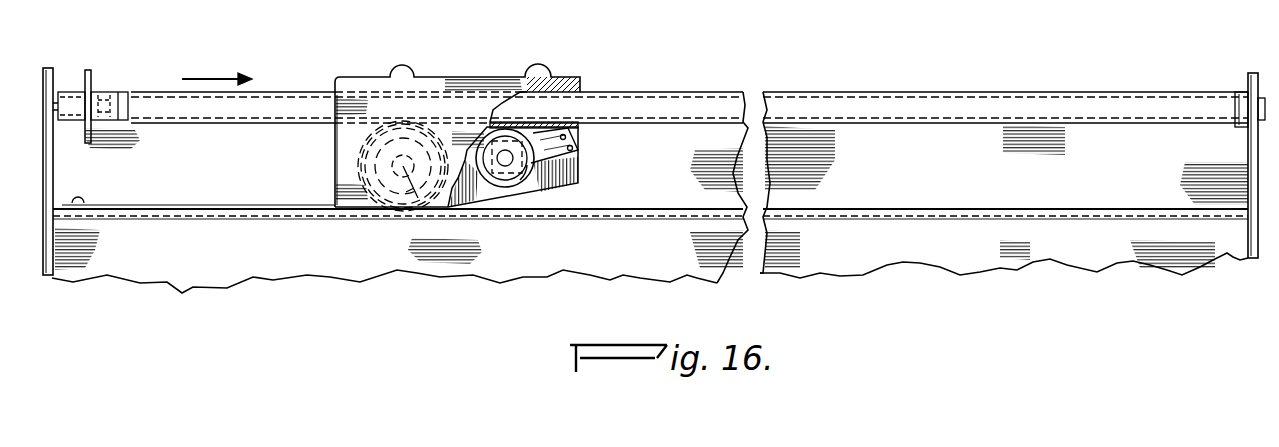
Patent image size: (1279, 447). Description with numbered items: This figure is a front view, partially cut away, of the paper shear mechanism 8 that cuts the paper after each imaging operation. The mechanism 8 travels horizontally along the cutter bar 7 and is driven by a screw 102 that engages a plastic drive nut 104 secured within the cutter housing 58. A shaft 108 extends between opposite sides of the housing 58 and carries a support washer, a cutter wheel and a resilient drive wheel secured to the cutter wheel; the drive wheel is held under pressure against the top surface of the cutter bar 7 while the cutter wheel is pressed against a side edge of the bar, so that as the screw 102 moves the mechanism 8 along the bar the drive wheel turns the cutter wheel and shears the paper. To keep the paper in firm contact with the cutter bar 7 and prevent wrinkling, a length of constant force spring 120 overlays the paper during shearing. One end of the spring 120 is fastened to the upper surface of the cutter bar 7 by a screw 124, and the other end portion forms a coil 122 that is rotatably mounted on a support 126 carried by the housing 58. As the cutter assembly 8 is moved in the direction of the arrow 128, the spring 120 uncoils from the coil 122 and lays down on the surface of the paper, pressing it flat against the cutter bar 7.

The cutter bar 7 is at (213, 210).
The paper shear mechanism 8 is at (472, 66).
The cutter housing 58 is at (337, 140).
The screw 102 is at (267, 123).
The plastic drive nut 104 is at (363, 88).
The shaft 108 is at (405, 205).
The constant force spring 120 is at (220, 205).
The coil 122 is at (530, 160).
The screw 124 is at (84, 200).
The support 126 is at (510, 183).
The arrow 128 is at (220, 79).